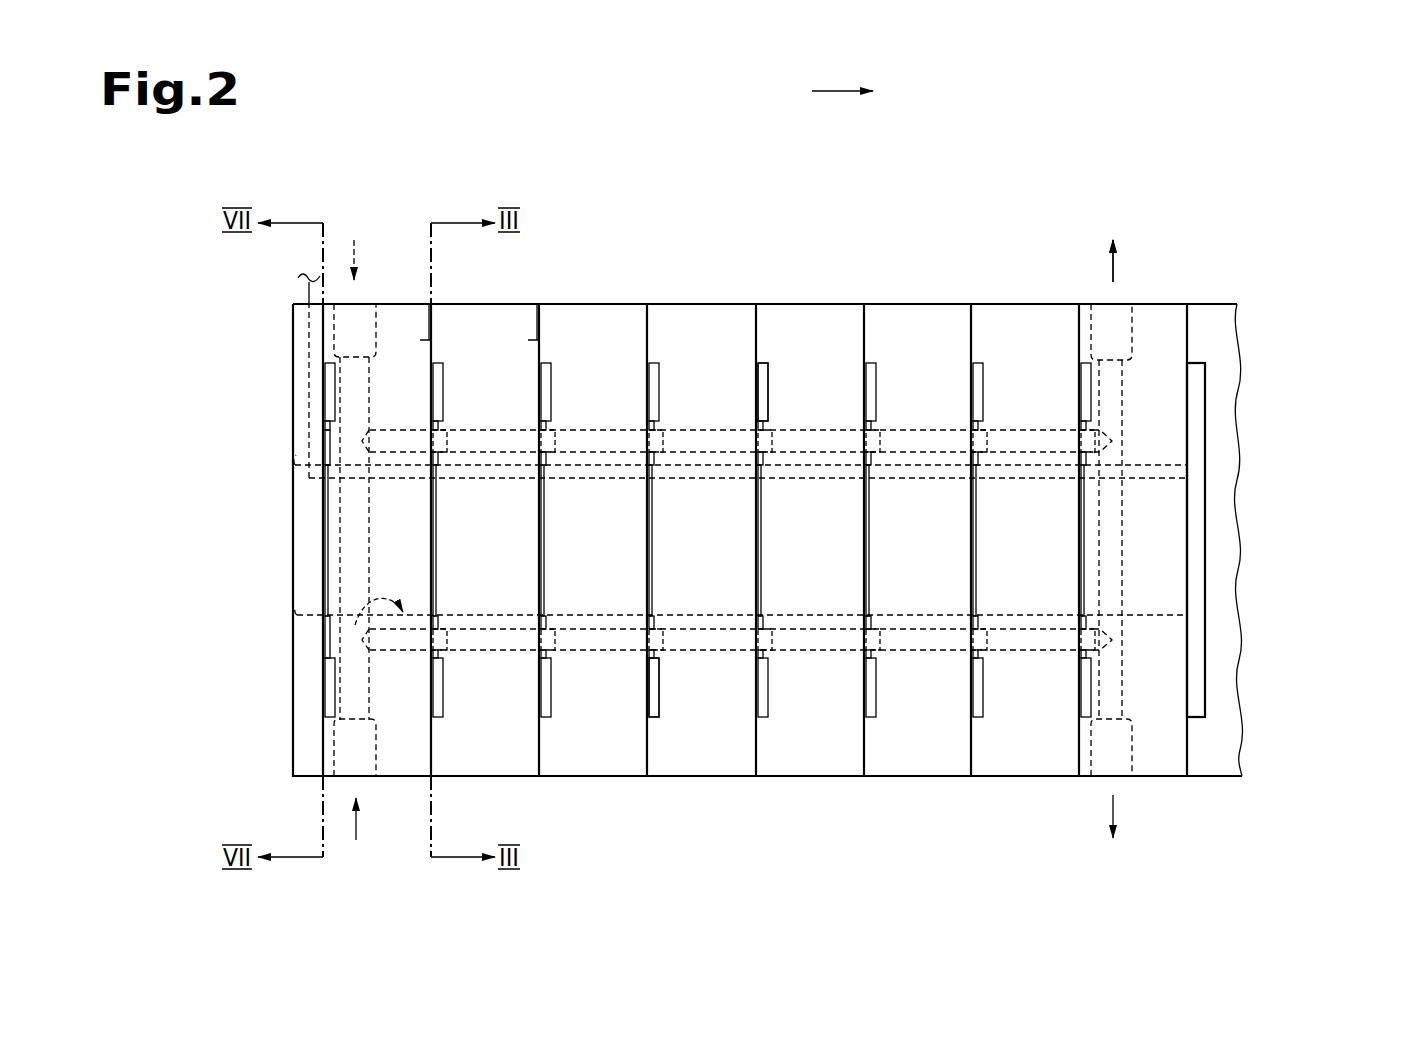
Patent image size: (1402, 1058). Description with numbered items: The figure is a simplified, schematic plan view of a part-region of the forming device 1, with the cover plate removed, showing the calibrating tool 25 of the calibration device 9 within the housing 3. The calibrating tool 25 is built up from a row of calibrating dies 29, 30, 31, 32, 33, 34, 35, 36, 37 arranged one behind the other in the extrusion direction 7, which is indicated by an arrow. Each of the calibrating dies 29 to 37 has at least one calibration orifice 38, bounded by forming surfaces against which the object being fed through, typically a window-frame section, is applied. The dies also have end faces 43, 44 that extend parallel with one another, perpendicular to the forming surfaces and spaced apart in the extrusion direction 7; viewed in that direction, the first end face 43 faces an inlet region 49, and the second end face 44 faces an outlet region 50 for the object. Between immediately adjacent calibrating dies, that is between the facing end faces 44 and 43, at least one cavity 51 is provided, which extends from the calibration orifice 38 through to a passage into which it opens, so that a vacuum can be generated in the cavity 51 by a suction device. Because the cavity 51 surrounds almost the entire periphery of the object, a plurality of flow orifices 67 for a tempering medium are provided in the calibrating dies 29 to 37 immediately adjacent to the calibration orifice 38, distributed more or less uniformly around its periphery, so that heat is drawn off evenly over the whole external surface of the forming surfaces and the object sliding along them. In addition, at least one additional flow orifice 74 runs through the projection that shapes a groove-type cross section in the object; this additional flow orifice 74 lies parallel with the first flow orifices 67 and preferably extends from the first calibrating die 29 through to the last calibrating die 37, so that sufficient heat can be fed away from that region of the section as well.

The apparatus 1 is at (1262, 205).
The housing 3 is at (1228, 180).
The extrusion direction 7 is at (830, 93).
The calibration device 9 is at (1183, 207).
The calibrating tool 25 is at (402, 838).
The calibrating die 29 is at (318, 357).
The calibrating die 30 is at (397, 335).
The calibrating die 31 is at (510, 327).
The calibrating die 32 is at (591, 337).
The calibrating die 33 is at (698, 338).
The calibrating die 34 is at (808, 340).
The calibrating die 35 is at (920, 347).
The calibrating die 36 is at (1030, 357).
The calibrating die 37 is at (1163, 338).
The calibration orifice 38 is at (355, 625).
The first end face 43 is at (425, 338).
The second end face 44 is at (433, 327).
The inlet region 49 is at (280, 468).
The outlet region 50 is at (1217, 517).
The cavity 51 is at (760, 390).
The flow orifice 67 is at (818, 630).
The additional flow orifice 74 is at (478, 478).